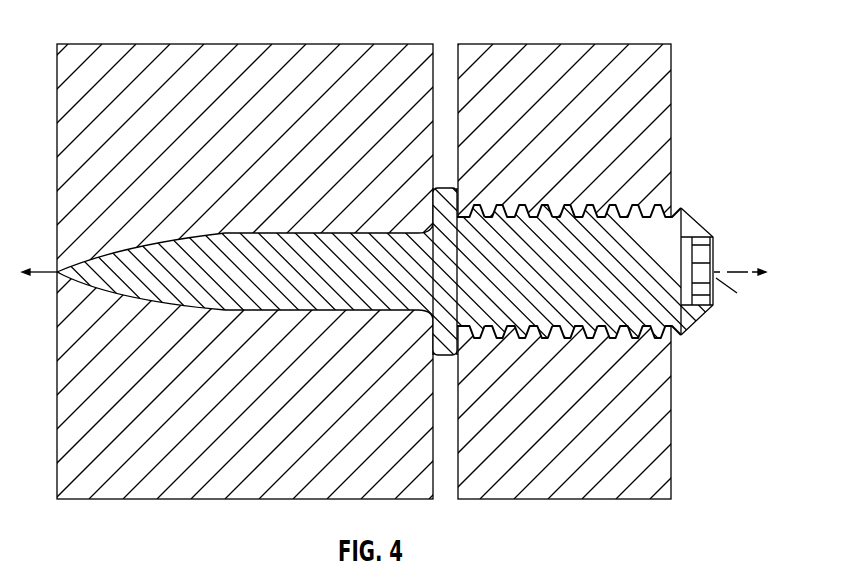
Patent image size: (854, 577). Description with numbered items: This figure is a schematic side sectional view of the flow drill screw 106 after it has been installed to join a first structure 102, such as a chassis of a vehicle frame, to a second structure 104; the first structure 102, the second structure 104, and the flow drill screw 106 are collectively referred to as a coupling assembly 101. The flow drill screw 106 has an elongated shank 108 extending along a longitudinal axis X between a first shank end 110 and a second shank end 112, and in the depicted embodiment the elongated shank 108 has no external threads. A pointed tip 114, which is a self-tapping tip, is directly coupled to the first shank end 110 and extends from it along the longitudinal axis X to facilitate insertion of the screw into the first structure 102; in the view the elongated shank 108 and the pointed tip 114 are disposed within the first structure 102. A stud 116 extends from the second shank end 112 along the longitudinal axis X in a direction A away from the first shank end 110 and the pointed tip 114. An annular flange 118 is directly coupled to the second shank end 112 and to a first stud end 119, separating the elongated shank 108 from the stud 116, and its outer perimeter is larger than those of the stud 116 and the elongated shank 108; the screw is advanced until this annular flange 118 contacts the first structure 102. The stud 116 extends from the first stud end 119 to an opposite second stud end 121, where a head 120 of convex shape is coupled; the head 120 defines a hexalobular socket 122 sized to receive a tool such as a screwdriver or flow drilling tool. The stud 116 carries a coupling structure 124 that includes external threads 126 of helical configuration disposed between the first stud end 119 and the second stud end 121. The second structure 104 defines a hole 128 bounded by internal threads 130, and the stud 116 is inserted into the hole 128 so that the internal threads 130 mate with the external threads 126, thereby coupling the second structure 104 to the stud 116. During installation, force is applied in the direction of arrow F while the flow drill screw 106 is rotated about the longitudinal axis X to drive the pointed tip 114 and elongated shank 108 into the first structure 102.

The coupling assembly 101 is at (427, 278).
The first structure 102 is at (121, 44).
The second structure 104 is at (620, 44).
The flow drill screw 106 is at (357, 230).
The elongated shank 108 is at (265, 250).
The first shank end 110 is at (157, 242).
The second shank end 112 is at (432, 312).
The pointed tip 114 is at (117, 262).
The stud 116 is at (624, 205).
The annular flange 118 is at (445, 352).
The first stud end 119 is at (460, 208).
The head 120 is at (701, 219).
The second stud end 121 is at (681, 207).
The socket 122 is at (711, 302).
The coupling structure 124 is at (573, 338).
The external threads 126 is at (612, 338).
The hole 128 is at (523, 332).
The internal threads 130 is at (530, 204).
The arrow F is at (51, 268).
The direction A is at (757, 270).
The longitudinal axis X is at (737, 294).